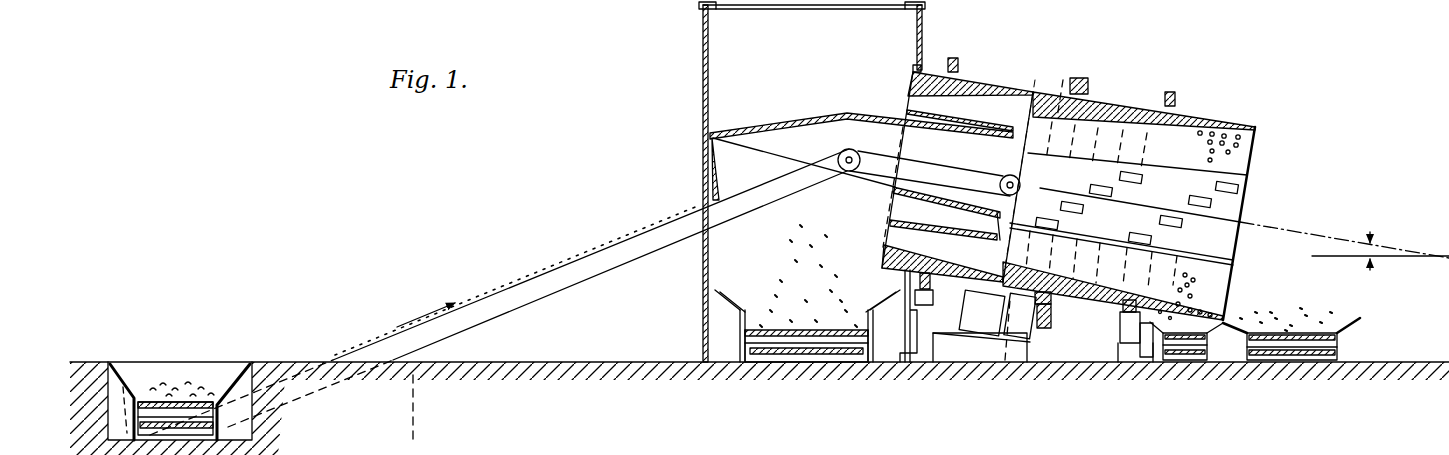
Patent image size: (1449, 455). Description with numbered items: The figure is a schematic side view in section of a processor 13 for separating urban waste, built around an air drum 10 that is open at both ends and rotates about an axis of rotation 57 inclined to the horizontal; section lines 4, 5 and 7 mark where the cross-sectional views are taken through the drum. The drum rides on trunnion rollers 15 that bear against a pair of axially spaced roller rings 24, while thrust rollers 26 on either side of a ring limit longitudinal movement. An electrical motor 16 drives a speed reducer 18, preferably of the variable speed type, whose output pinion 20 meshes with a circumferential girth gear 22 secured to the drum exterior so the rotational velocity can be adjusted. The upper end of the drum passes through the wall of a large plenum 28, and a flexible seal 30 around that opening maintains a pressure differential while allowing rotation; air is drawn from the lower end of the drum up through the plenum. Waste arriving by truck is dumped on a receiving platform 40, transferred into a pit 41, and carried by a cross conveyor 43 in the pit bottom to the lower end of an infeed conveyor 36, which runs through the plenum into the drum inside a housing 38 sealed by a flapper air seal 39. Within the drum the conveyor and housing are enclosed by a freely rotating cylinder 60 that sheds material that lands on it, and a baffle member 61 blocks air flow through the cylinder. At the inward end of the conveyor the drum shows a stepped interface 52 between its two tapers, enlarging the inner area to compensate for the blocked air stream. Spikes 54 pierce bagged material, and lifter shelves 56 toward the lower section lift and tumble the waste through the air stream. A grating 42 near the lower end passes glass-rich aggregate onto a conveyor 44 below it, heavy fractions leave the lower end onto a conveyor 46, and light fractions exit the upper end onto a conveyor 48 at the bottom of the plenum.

The screening machine body 10 is at (1207, 118).
The processor 13 is at (1138, 56).
The trunnion rollers 15 is at (925, 306).
The electrical motor 16 is at (995, 322).
The speed reducer 18 is at (1018, 345).
The pinion 20 is at (1055, 305).
The girth gear 22 is at (1082, 78).
The roller rings 24 is at (955, 60).
The thrust rollers 26 is at (1122, 343).
The plenum 28 is at (703, 57).
The seal 30 is at (922, 68).
The infeed conveyor 36 is at (609, 273).
The housing 38 is at (787, 112).
The flapper air seal 39 is at (703, 185).
The receiving platform 40 is at (86, 362).
The pit 41 is at (132, 397).
The grating 42 is at (1197, 292).
The cross conveyor 43 is at (205, 402).
The conveyor 44 is at (1210, 345).
The conveyor 46 is at (1322, 335).
The conveyor 48 is at (742, 322).
The stepped interface 52 is at (1036, 100).
The spikes 54 is at (1208, 150).
The lifter shelves 56 is at (1135, 182).
The axis of rotation 57 is at (1382, 256).
The cylinder 60 is at (957, 238).
The baffle member 61 is at (1018, 140).
The section line 4- 4 is at (1035, 79).
The section line 5- 5 is at (1063, 80).
The section line 7- 7 is at (1150, 106).